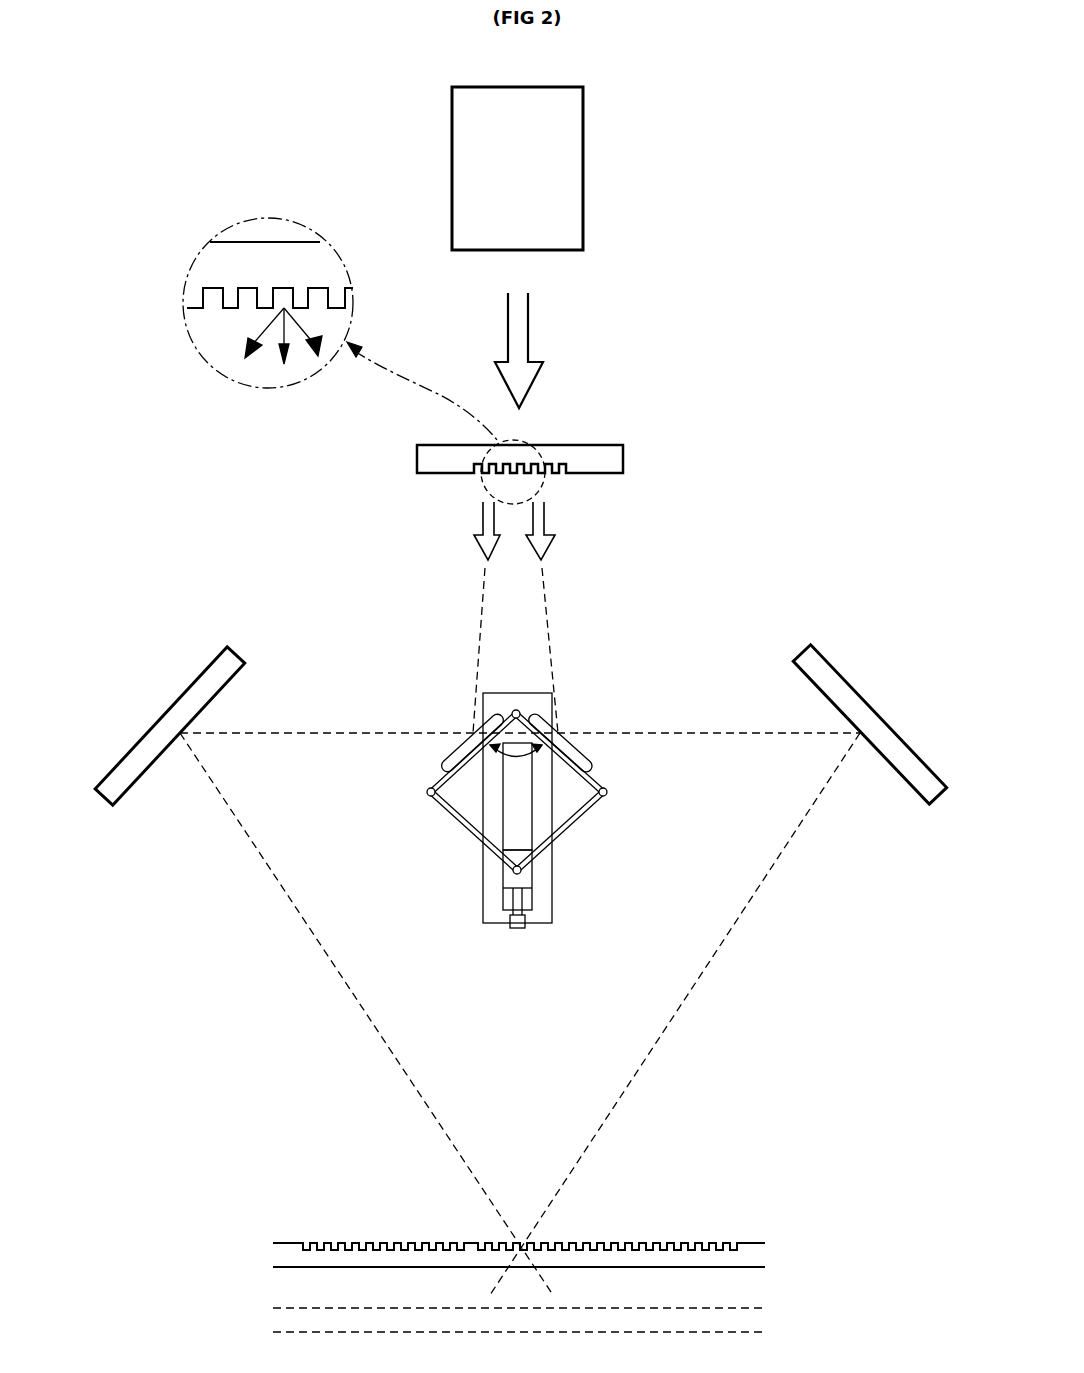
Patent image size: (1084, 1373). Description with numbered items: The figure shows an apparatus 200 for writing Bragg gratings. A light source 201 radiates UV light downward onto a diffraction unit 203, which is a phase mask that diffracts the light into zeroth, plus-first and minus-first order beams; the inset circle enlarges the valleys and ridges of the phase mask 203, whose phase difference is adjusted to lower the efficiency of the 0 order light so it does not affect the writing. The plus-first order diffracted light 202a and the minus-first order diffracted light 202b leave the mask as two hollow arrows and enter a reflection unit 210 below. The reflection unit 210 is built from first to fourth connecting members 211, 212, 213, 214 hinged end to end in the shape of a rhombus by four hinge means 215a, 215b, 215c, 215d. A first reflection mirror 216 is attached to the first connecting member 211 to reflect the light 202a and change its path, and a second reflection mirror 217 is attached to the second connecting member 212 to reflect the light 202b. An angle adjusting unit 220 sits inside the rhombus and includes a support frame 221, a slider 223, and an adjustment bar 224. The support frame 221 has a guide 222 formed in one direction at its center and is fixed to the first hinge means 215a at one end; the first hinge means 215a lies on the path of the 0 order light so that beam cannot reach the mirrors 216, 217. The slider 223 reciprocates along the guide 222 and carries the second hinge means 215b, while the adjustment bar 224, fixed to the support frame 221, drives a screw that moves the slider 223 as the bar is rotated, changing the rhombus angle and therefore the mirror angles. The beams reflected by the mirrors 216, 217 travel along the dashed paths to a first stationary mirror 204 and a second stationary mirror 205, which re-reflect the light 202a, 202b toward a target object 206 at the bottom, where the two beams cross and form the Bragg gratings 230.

The apparatus for writing Bragg gratings 200 is at (162, 175).
The light source 201 is at (567, 188).
The +1st order diffracted light 202a is at (478, 522).
The -1st order diffracted light 202b is at (550, 527).
The diffraction unit 203 is at (605, 452).
The first stationary mirror 204 is at (182, 712).
The second stationary mirror 205 is at (843, 692).
The target object 206 is at (751, 1250).
The reflection unit 210 is at (468, 722).
The first connecting member 211 is at (432, 786).
The second connecting member 212 is at (598, 778).
The third connecting member 213 is at (452, 817).
The fourth connecting member 214 is at (587, 812).
The first hinge means 215a is at (519, 712).
The second hinge means 215b is at (514, 872).
The third hinge means 215c is at (427, 792).
The fourth hinge means 215d is at (607, 792).
The first reflection mirror 216 is at (455, 753).
The second reflection mirror 217 is at (566, 748).
The angle adjusting unit 220 is at (660, 847).
The support frame 221 is at (553, 910).
The guide 222 is at (527, 825).
The slider 223 is at (533, 882).
The adjustment bar 224 is at (527, 930).
The photoresist grating pattern 230 is at (633, 1243).
The 0th order diffracted light 0 is at (282, 370).